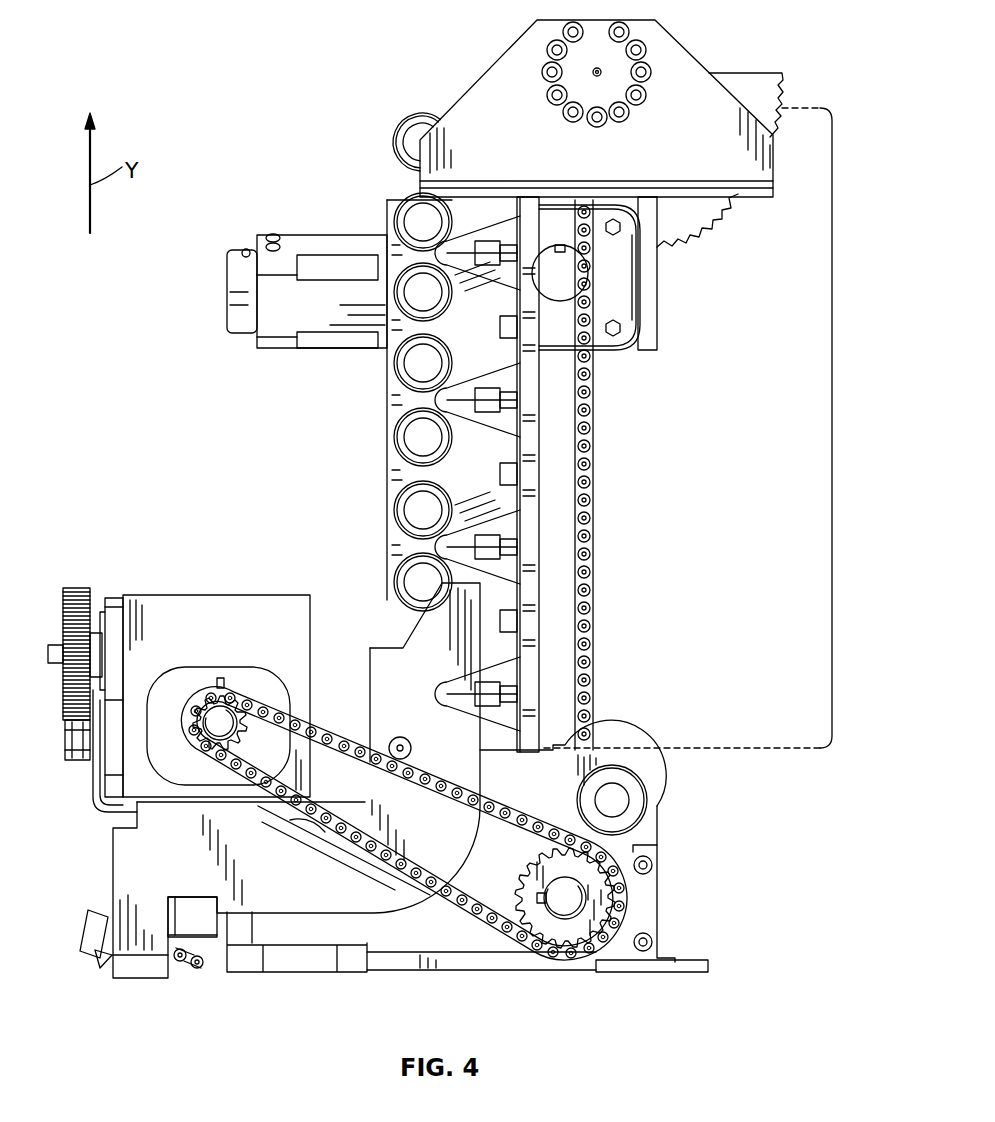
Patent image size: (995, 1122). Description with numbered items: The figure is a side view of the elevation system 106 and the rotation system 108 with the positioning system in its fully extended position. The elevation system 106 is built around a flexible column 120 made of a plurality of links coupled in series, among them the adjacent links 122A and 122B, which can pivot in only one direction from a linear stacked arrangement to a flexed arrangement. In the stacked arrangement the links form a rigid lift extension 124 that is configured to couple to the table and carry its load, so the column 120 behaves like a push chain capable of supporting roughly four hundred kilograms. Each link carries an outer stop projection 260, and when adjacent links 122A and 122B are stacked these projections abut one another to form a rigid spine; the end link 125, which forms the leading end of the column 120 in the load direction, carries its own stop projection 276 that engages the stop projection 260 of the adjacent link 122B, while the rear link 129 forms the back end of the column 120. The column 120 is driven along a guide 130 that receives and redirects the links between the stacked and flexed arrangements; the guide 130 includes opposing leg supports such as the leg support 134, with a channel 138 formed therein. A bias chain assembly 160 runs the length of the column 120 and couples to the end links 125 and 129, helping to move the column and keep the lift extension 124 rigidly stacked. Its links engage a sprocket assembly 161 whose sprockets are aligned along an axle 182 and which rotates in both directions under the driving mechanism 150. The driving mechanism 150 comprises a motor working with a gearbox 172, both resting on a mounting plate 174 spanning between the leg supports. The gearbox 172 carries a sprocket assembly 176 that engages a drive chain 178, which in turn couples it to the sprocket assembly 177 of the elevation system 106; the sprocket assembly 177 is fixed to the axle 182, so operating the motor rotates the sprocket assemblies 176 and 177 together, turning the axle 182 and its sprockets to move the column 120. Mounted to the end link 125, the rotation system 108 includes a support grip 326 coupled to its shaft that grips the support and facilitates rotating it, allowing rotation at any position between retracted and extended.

The elevation system 106 is at (165, 420).
The rotation system 108 is at (747, 34).
The flexible column 120 is at (398, 426).
The link 122A is at (395, 478).
The link 122B is at (395, 383).
The lift extension 124 is at (712, 428).
The end link 125 is at (432, 108).
The rear link 129 is at (208, 940).
The guide 130 is at (356, 676).
The leg support 134 is at (395, 688).
The channel 138 is at (381, 638).
The driving mechanism 150 is at (116, 576).
The bias chain assembly 160 is at (600, 425).
The sprocket assembly 161 is at (600, 883).
The gearbox 172 is at (210, 606).
The mounting plate 174 is at (170, 802).
The sprocket assembly 176 is at (248, 703).
The sprocket assembly 177 is at (492, 854).
The drive chain 178 is at (492, 803).
The axle 182 is at (570, 902).
The outer stop projection 260 is at (527, 228).
The stop projection 276 is at (537, 205).
The support grip 326 is at (527, 52).